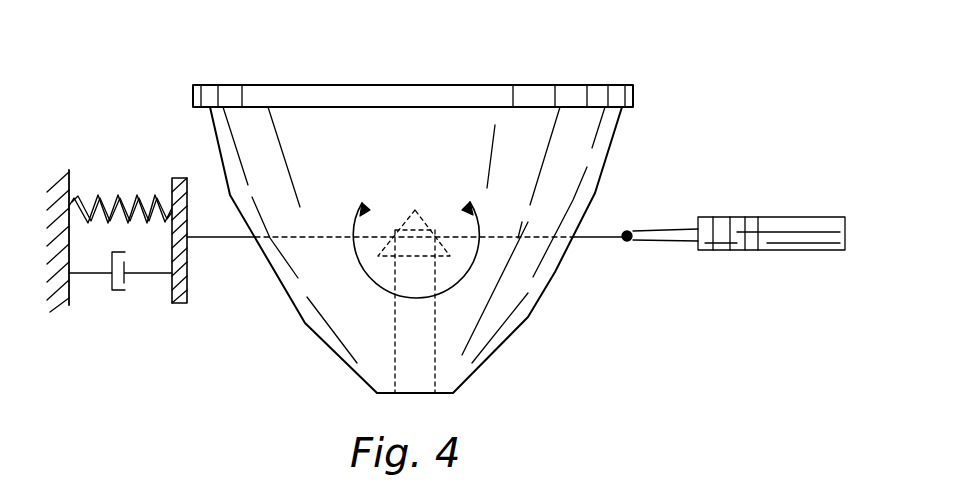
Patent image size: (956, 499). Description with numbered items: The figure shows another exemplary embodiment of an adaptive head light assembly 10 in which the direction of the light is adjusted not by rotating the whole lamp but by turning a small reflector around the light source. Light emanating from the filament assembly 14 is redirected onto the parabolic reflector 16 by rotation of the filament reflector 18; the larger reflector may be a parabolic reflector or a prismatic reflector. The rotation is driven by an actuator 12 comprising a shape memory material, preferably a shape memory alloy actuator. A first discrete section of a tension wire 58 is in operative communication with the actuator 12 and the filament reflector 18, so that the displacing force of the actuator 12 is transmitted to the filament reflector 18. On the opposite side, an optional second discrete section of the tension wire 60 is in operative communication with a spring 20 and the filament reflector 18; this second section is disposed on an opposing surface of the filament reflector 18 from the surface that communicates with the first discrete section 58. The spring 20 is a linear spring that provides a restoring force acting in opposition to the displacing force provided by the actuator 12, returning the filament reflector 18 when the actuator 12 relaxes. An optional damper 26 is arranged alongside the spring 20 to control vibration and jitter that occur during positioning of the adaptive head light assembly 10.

The adaptive head light assembly 10 is at (570, 68).
The actuator 12 is at (782, 225).
The filament assembly 14 is at (412, 320).
The parabolic reflector 16 is at (555, 275).
The filament reflector 18 is at (408, 220).
The spring 20 is at (132, 197).
The damper 26 is at (110, 287).
The first discrete section of tension wire 58 is at (603, 237).
The second discrete section of tension wire 60 is at (222, 240).